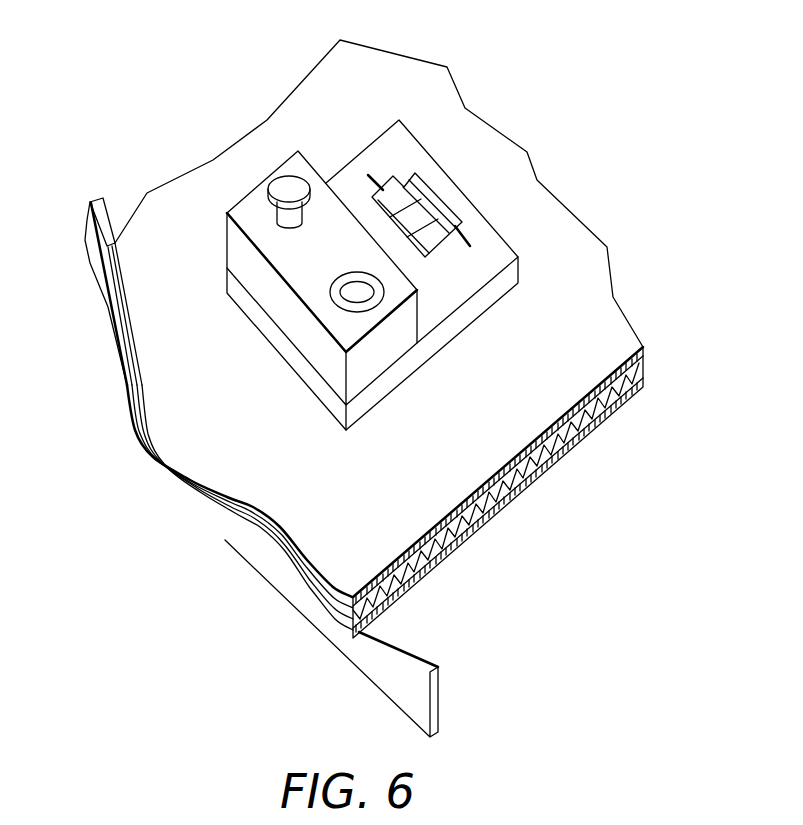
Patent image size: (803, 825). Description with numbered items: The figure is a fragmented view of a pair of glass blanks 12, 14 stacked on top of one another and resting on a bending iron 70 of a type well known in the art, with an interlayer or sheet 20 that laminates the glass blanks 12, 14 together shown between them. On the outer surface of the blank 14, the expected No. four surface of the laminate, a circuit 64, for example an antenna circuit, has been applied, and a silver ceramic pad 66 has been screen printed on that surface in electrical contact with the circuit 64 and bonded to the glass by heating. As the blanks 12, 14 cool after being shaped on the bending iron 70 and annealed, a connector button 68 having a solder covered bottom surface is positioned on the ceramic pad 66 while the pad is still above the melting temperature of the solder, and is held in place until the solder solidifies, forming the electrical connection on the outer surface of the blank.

The glass blank 12 is at (573, 452).
The glass blank 14 is at (432, 509).
The interlayer 20 is at (530, 483).
The circuit 64 is at (392, 176).
The silver ceramic pad 66 is at (462, 325).
The connector button 68 is at (270, 302).
The bending iron 70 is at (402, 687).